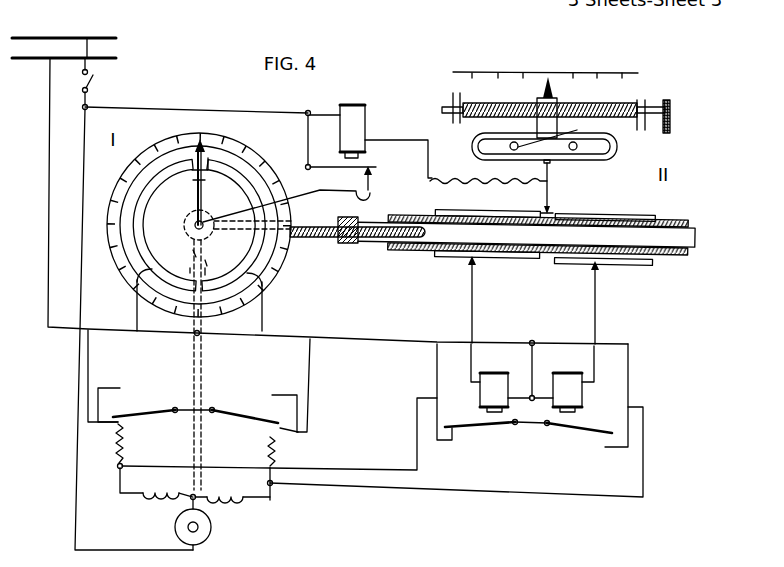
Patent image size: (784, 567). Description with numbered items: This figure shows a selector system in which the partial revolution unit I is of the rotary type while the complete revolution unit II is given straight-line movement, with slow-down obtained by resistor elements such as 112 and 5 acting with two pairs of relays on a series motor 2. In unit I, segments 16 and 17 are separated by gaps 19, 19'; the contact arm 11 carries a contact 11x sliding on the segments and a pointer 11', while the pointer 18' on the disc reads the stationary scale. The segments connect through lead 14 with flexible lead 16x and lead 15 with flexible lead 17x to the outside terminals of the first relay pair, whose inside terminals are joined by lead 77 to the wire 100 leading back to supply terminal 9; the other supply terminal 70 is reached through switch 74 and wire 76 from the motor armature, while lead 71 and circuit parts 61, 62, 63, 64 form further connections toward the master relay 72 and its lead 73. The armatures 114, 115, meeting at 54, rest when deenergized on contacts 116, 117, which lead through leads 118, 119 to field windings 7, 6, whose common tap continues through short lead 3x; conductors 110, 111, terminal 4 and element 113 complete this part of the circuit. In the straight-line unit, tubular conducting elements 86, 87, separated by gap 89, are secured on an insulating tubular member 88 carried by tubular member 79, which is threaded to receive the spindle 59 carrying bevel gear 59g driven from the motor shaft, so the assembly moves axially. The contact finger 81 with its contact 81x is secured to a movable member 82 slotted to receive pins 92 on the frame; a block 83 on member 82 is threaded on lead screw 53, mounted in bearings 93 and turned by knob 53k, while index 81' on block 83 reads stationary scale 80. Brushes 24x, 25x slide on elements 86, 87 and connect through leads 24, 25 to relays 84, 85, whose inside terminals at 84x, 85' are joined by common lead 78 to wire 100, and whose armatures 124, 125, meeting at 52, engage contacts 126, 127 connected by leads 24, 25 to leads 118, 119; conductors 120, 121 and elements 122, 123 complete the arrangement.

The motor 2 is at (212, 528).
The short lead 3x is at (190, 503).
The terminal 4 is at (117, 466).
The resistor 5 is at (275, 448).
The field winding 6 is at (224, 496).
The field winding 7 is at (152, 492).
The terminal of current supply 9 is at (44, 58).
The contact arm 11 is at (186, 187).
The pointer 11' is at (232, 170).
The contact 11x is at (196, 180).
The lead 14 is at (134, 305).
The lead 15 is at (264, 303).
The segment 16 is at (150, 258).
The flexible lead 16x is at (137, 275).
The segment 17 is at (249, 258).
The flexible lead 17x is at (262, 278).
The pointer 18' is at (216, 134).
The gap 19 is at (199, 215).
The gap 19' is at (185, 262).
The lead 24 is at (357, 470).
The brush 24x is at (475, 265).
The lead 25 is at (640, 496).
The brush 25x is at (593, 269).
The pivot 52 is at (528, 425).
The lead screw 53 is at (612, 117).
The knob 53k is at (680, 113).
The pivot 54 is at (201, 416).
The spindle or shaft 59 is at (318, 239).
The bevel gear 59g is at (212, 211).
The conductor 61 is at (306, 137).
The conductor 62 is at (343, 179).
The contact arm 63 is at (297, 204).
The contact 64 is at (372, 169).
The terminal of source of supply 70 is at (88, 38).
The conductor 71 is at (190, 109).
The master relay 72 is at (363, 124).
The lead 73 is at (405, 140).
The switch 74 is at (93, 81).
The wire 76 is at (86, 178).
The lead 77 is at (203, 352).
The common lead 78 is at (533, 343).
The tubular member 79 is at (378, 246).
The stationary scale 80 is at (587, 72).
The contact finger 81 is at (562, 187).
The index 81' is at (546, 71).
The contact 81x is at (551, 212).
The movable member 82 is at (619, 148).
The block 83 is at (557, 104).
The relay 84 is at (490, 374).
The coil terminal 84x is at (517, 385).
The relay 85 is at (564, 379).
The coil terminal 85' is at (544, 387).
The conducting element 86 is at (468, 209).
The conducting element 87 is at (618, 215).
The tubular member 88 is at (677, 219).
The gap 89 is at (541, 213).
The pins 92 is at (580, 130).
The bearings 93 is at (450, 100).
The wire 100 is at (48, 170).
The conductor 110 is at (86, 357).
The conductor 111 is at (310, 372).
The resistor 112 is at (123, 440).
The stop 113 is at (299, 418).
The armature 114 is at (143, 415).
The armature 115 is at (245, 417).
The contact 116 is at (120, 400).
The contact 117 is at (274, 408).
The lead 118 is at (119, 492).
The lead 119 is at (268, 501).
The conductor 120 is at (436, 375).
The conductor 121 is at (630, 363).
The stop 122 is at (451, 431).
The stop 123 is at (606, 432).
The armature 124 is at (478, 425).
The armature 125 is at (575, 429).
The contact 126 is at (460, 412).
The contact 127 is at (604, 418).